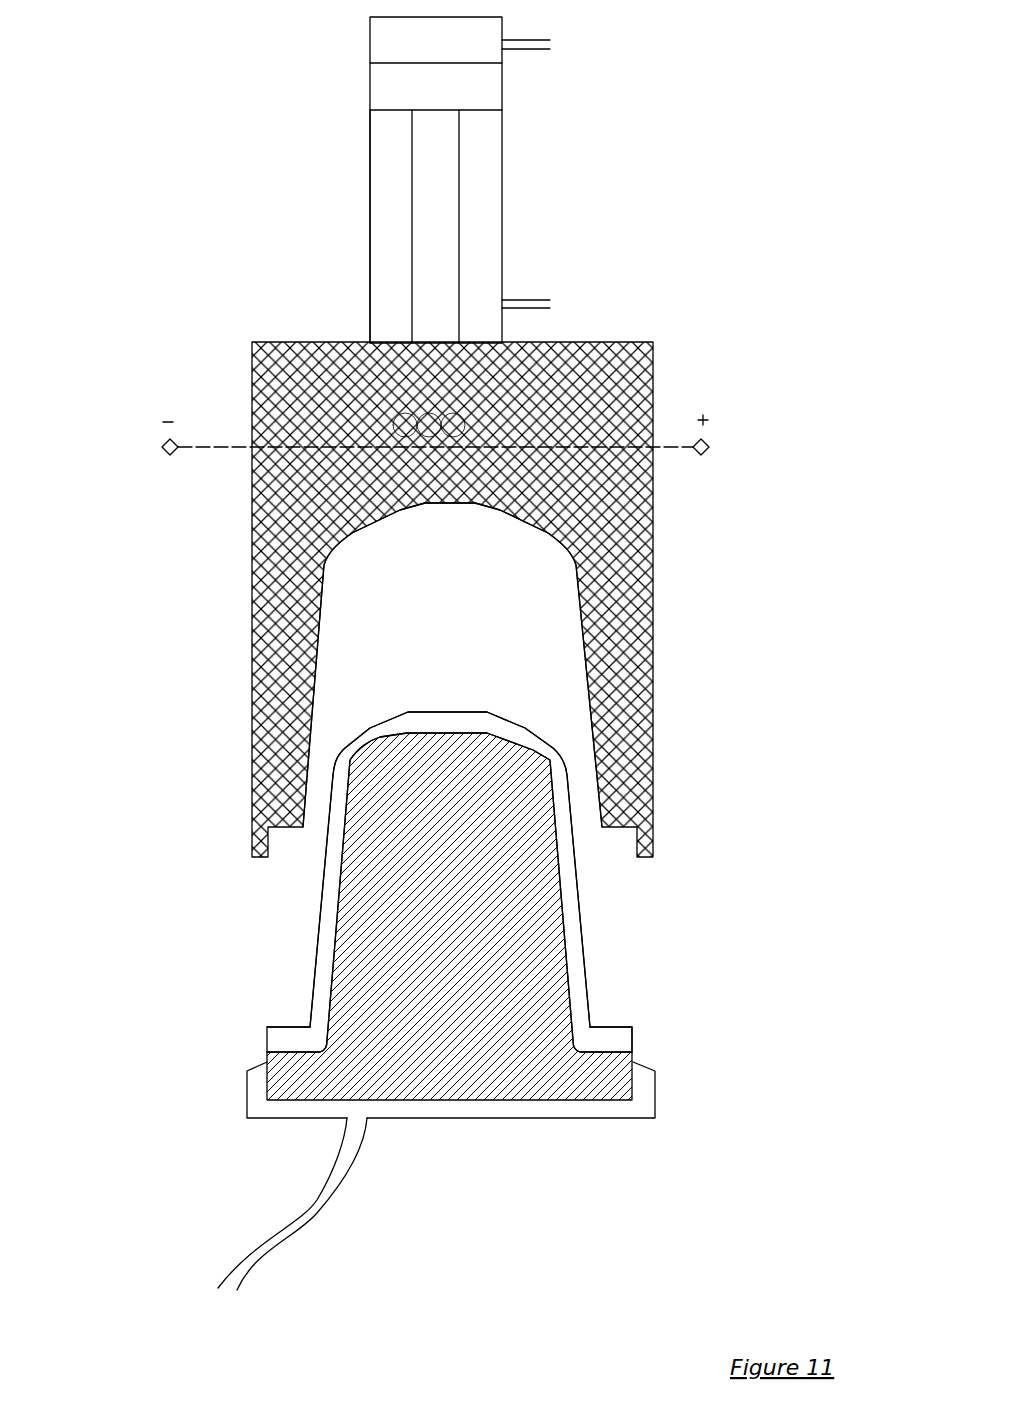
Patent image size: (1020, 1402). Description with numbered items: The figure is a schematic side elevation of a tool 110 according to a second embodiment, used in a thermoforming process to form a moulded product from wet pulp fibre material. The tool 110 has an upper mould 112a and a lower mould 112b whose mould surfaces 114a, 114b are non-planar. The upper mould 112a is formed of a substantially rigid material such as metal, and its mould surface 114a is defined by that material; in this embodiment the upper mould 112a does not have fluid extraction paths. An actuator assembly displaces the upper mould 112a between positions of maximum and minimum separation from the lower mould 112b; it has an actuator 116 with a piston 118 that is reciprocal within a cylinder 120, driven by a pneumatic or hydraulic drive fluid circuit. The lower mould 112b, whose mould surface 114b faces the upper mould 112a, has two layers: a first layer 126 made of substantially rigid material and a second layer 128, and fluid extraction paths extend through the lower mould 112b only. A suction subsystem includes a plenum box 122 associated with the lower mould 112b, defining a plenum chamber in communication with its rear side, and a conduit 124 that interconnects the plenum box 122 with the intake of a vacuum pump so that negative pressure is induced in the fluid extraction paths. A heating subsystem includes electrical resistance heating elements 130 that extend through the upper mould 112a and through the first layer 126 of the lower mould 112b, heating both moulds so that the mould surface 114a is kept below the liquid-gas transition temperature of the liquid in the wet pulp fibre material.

The tool 110 is at (687, 1137).
The upper mould 112a is at (687, 493).
The lower mould 112b is at (233, 1053).
The mould surface 114a is at (543, 537).
The mould surface 114b is at (307, 988).
The actuator 116 is at (357, 167).
The piston 118 is at (459, 223).
The cylinder 120 is at (370, 257).
The plenum box 122 is at (263, 1118).
The conduit 124 is at (263, 1260).
The first layer 126 is at (633, 1062).
The second layer 128 is at (583, 973).
The electrical resistance heating elements 130 is at (530, 447).